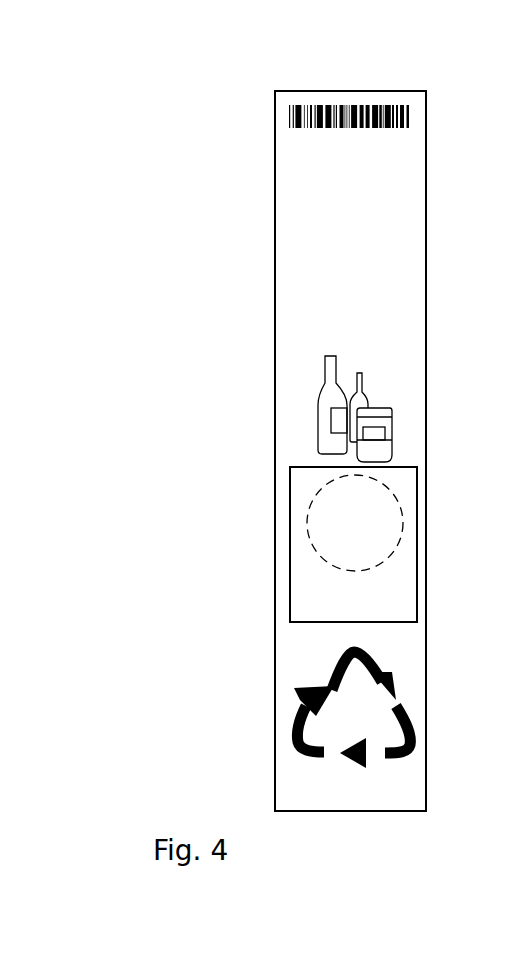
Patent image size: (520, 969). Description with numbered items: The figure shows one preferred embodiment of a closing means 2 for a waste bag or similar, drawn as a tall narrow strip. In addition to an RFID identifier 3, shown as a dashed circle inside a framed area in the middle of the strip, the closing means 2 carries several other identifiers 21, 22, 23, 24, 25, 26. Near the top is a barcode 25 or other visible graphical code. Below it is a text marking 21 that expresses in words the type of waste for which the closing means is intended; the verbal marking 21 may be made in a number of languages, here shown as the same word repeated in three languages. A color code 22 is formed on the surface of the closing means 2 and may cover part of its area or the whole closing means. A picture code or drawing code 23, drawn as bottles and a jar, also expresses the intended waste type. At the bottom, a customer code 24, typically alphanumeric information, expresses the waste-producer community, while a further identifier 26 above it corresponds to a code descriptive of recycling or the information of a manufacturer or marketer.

The closing means 2 is at (413, 257).
The RFID identifier 3 is at (310, 533).
The text marking 21 is at (360, 275).
The color code 22 is at (402, 347).
The picture code or drawing code 23 is at (383, 433).
The customer code 24 is at (342, 797).
The barcode 25 is at (350, 102).
The identifier 26 is at (393, 683).